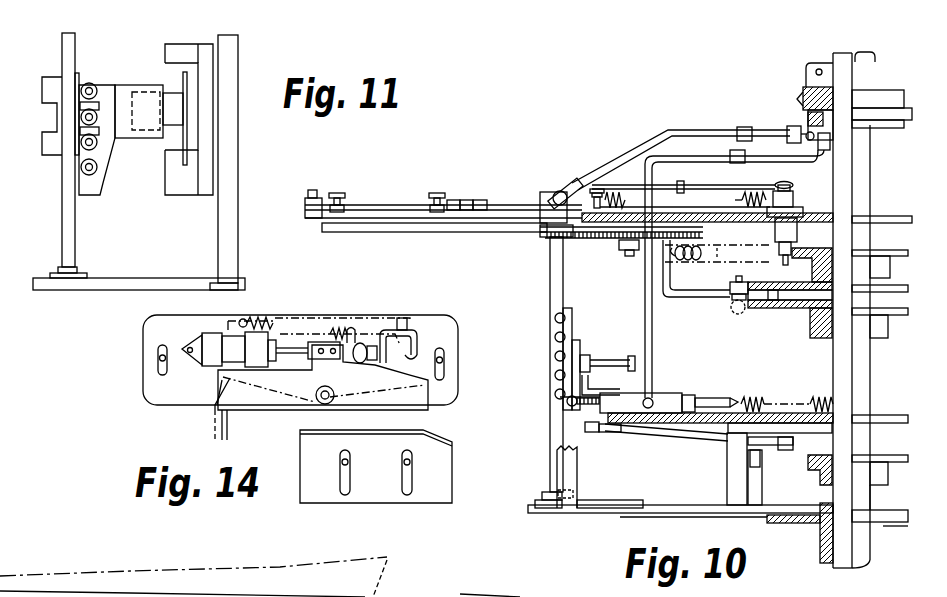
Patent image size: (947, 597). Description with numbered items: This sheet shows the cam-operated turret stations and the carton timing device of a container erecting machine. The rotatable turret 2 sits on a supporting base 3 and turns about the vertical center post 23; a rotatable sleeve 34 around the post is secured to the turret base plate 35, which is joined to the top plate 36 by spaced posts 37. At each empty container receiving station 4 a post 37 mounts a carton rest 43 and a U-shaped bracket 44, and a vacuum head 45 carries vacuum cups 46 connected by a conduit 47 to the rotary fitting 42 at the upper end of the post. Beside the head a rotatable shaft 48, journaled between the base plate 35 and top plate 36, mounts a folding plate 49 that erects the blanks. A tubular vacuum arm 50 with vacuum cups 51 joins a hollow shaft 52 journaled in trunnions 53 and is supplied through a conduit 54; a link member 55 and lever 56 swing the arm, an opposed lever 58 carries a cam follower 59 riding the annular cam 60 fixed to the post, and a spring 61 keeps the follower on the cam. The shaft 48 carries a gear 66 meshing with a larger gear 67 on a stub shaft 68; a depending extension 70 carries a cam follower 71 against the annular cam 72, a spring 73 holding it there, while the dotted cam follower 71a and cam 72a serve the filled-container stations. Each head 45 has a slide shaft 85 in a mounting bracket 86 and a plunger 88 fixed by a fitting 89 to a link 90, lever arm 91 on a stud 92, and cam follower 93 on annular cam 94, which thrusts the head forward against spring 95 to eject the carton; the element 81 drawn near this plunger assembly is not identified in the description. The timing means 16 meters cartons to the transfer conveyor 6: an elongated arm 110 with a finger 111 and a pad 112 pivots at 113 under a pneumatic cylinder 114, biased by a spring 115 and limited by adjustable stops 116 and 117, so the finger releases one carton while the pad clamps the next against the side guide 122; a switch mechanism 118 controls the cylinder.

In FIG. 10, the rotatable turret 2 is at (621, 324).
In FIG. 10, the supporting base 3 is at (311, 573).
In FIG. 11, the container receiving station 4 is at (139, 177).
In FIG. 10, the transfer conveyor 6 is at (489, 596).
In FIG. 14, the timing means 16 is at (306, 361).
In FIG. 10, the vertical center post 23 is at (867, 173).
In FIG. 10, the rotatable sleeve 34 is at (866, 543).
In FIG. 11, the base plate 35 is at (167, 283).
In FIG. 10, the base plate 35 is at (886, 415).
In FIG. 10, the top plate 36 is at (888, 216).
In FIG. 11, the post 37 is at (229, 107).
In FIG. 10, the post 37 is at (574, 471).
In FIG. 10, the rotary fitting 42 is at (893, 97).
In FIG. 11, the carton rest 43 is at (185, 196).
In FIG. 11, the U-shaped bracket 44 is at (135, 138).
In FIG. 11, the vacuum head 45 is at (106, 88).
In FIG. 10, the vacuum head 45 is at (573, 325).
In FIG. 11, the vacuum cups 46 is at (90, 83).
In FIG. 10, the vacuum cups 46 is at (553, 318).
In FIG. 10, the conduit 47 is at (652, 334).
In FIG. 11, the rotatable shaft 48 is at (62, 51).
In FIG. 10, the rotatable shaft 48 is at (565, 283).
In FIG. 11, the folding plate 49 is at (43, 149).
In FIG. 10, the tubular vacuum arm 50 is at (373, 204).
In FIG. 10, the vacuum cups 51 is at (338, 191).
In FIG. 10, the hollow shaft 52 is at (786, 182).
In FIG. 10, the trunnions 53 is at (544, 190).
In FIG. 10, the conduit 54 is at (643, 142).
In FIG. 10, the link member 55 is at (697, 184).
In FIG. 10, the lever 56 is at (795, 197).
In FIG. 10, the lever 58 is at (776, 244).
In FIG. 10, the cam follower 59 is at (789, 254).
In FIG. 10, the annular cam 60 is at (902, 252).
In FIG. 10, the spring 61 is at (661, 197).
In FIG. 10, the gear 66 is at (543, 239).
In FIG. 10, the gear 67 is at (603, 239).
In FIG. 10, the stub shaft 68 is at (630, 257).
In FIG. 10, the depending extension 70 is at (688, 297).
In FIG. 10, the cam follower 71 is at (741, 282).
In FIG. 10, the cam follower 71a is at (728, 314).
In FIG. 10, the annular cam 72 is at (907, 287).
In FIG. 10, the cam 72a is at (906, 318).
In FIG. 10, the spring 73 is at (717, 247).
In FIG. 10, the block 81 is at (663, 394).
In FIG. 10, the slide shaft 85 is at (600, 362).
In FIG. 10, the mounting bracket 86 is at (592, 393).
In FIG. 10, the plunger 88 is at (708, 397).
In FIG. 10, the fitting 89 is at (582, 418).
In FIG. 10, the link 90 is at (667, 434).
In FIG. 10, the lever arm 91 is at (777, 451).
In FIG. 10, the stud 92 is at (726, 491).
In FIG. 10, the cam follower 93 is at (755, 468).
In FIG. 10, the annular cam 94 is at (884, 457).
In FIG. 10, the spring 95 is at (779, 397).
In FIG. 14, the elongated arm 110 is at (296, 393).
In FIG. 14, the finger 111 is at (217, 386).
In FIG. 14, the pad 112 is at (412, 415).
In FIG. 14, the pivot 113 is at (325, 404).
In FIG. 14, the pneumatic cylinder 114 is at (228, 342).
In FIG. 14, the spring 115 is at (298, 327).
In FIG. 14, the adjustable stop 116 is at (404, 323).
In FIG. 14, the adjustable stop 117 is at (370, 344).
In FIG. 10, the switch mechanism 118 is at (720, 556).
In FIG. 14, the side guide 122 is at (440, 481).